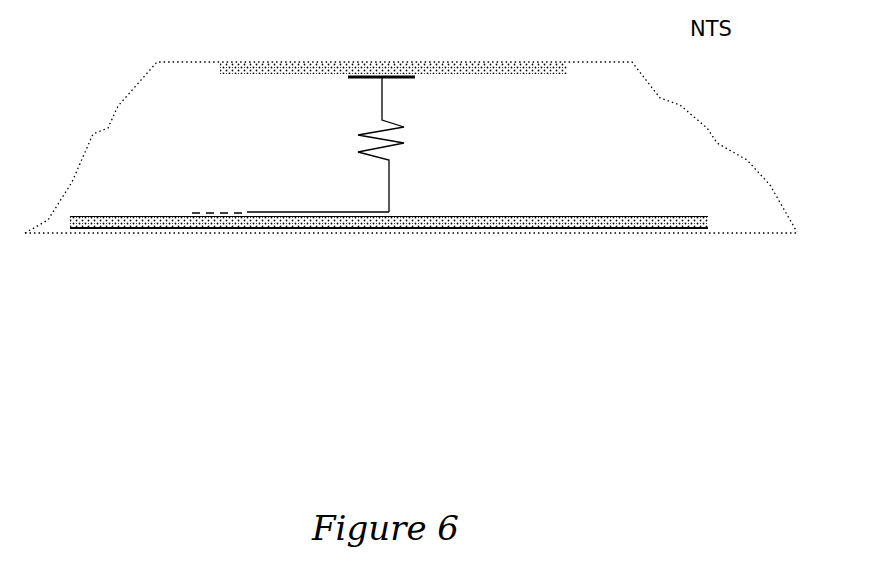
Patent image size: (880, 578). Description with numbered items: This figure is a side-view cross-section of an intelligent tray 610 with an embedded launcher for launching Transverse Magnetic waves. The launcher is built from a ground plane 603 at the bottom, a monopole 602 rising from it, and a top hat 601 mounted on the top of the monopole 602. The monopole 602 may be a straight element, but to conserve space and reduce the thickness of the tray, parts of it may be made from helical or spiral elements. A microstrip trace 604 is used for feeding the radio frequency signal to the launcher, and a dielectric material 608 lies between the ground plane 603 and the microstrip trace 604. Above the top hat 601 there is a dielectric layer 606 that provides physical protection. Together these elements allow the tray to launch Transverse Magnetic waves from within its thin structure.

The top hat 601 is at (410, 69).
The monopole 602 is at (405, 145).
The ground plane 603 is at (316, 242).
The microstrip trace 604 is at (266, 206).
The dielectric layer 606 is at (252, 64).
The dielectric material 608 is at (155, 227).
The intelligent tray 610 is at (411, 147).